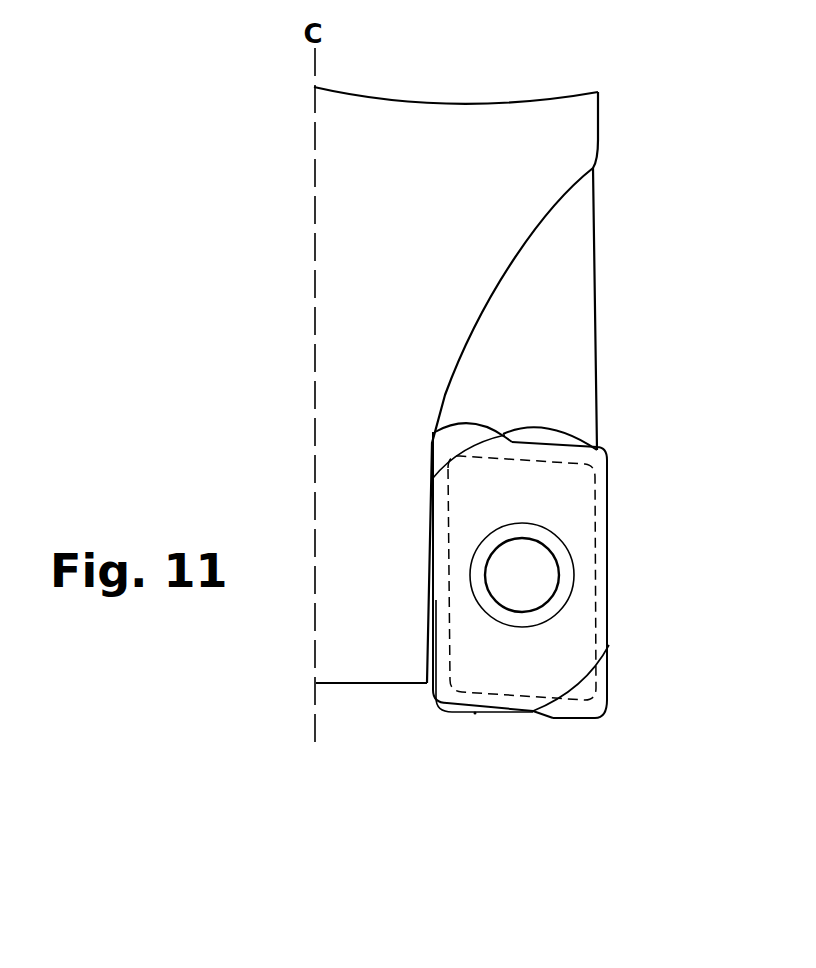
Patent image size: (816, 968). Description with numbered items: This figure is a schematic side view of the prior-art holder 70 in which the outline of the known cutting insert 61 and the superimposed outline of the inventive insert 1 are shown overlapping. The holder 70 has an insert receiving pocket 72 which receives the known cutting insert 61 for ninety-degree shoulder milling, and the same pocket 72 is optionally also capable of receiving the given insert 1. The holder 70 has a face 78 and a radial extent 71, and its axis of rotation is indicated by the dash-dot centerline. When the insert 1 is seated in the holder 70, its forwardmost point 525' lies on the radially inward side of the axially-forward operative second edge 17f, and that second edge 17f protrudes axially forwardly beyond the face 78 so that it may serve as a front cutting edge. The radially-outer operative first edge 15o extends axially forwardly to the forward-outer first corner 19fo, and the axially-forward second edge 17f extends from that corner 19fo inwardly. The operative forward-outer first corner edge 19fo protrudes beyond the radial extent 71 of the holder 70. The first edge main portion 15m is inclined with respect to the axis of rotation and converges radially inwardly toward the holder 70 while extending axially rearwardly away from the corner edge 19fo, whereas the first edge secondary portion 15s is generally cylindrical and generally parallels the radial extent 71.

The holder 70 is at (367, 275).
The radial extent 71 is at (597, 345).
The insert receiving pocket 72 is at (475, 422).
The face 78 is at (378, 685).
The known cutting insert 61 is at (453, 440).
The insert 1 is at (571, 429).
The first edge secondary portion 15s is at (604, 480).
The radially-outer operative first edge 15o is at (607, 510).
The first edge main portion 15m is at (607, 633).
The forward-outer first corner 19fo is at (609, 683).
The axially-forward operative second edge 17f is at (522, 713).
The forwardmost point 525' is at (433, 765).